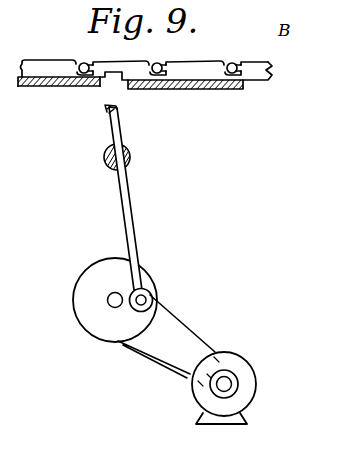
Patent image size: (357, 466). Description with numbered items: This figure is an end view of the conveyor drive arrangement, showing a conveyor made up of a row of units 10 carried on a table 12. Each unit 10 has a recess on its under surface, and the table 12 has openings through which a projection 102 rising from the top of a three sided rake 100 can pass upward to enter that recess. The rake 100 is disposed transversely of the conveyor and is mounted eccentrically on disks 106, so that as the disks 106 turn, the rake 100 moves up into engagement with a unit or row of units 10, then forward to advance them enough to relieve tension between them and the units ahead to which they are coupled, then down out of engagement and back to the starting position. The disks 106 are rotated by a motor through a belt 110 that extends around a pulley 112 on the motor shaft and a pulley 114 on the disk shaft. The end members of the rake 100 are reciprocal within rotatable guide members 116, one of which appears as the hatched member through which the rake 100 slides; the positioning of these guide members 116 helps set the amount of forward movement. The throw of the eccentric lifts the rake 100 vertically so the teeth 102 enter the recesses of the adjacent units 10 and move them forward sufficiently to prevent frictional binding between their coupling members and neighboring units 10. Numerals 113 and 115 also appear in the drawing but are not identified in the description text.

The unit 10 is at (178, 59).
The table 12 is at (87, 88).
The three sided rake 100 is at (138, 205).
The projection 102 is at (123, 108).
The disk 106 is at (93, 258).
The belt 110 is at (142, 358).
The pulley 112 is at (219, 397).
The gap between strips 113 is at (120, 88).
The pulley 114 is at (249, 360).
The hatched strip 115 is at (40, 87).
The rotatable guide member 116 is at (131, 158).